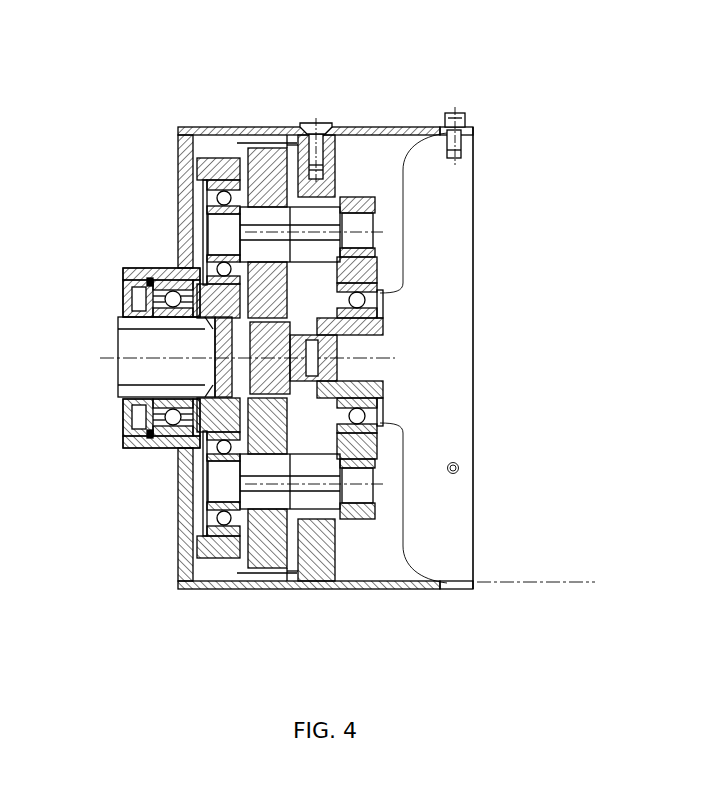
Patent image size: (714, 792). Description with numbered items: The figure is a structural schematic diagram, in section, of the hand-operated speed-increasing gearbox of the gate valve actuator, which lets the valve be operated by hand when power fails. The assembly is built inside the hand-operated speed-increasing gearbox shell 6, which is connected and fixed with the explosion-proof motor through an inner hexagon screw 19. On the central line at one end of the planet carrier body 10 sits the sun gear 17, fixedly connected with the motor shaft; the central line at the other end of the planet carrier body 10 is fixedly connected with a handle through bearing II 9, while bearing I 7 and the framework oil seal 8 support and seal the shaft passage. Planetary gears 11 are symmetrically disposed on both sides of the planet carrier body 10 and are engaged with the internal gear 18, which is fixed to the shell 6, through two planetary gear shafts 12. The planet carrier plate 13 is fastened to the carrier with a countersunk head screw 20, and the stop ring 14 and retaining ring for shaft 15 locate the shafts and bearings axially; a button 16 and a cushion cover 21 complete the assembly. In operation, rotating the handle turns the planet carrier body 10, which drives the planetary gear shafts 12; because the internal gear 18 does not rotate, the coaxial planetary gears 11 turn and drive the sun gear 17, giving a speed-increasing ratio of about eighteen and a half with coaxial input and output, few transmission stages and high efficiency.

The hand-operated speed-increasing gearbox shell 6 is at (180, 143).
The bearing I 7 is at (205, 183).
The framework oil seal 8 is at (122, 281).
The bearing II 9 is at (120, 290).
The planet carrier body 10 is at (210, 398).
The planetary gear 11 is at (212, 458).
The planetary gear shaft 12 is at (310, 495).
The planet carrier plate 13 is at (363, 513).
The stop ring 14 is at (375, 447).
The retaining ring for shaft 15 is at (375, 402).
The button 16 is at (358, 357).
The sun gear 17 is at (383, 315).
The internal gear 18 is at (318, 191).
The inner hexagon screw 19 is at (467, 116).
The countersunk head screw 20 is at (317, 125).
The cushion cover 21 is at (240, 197).